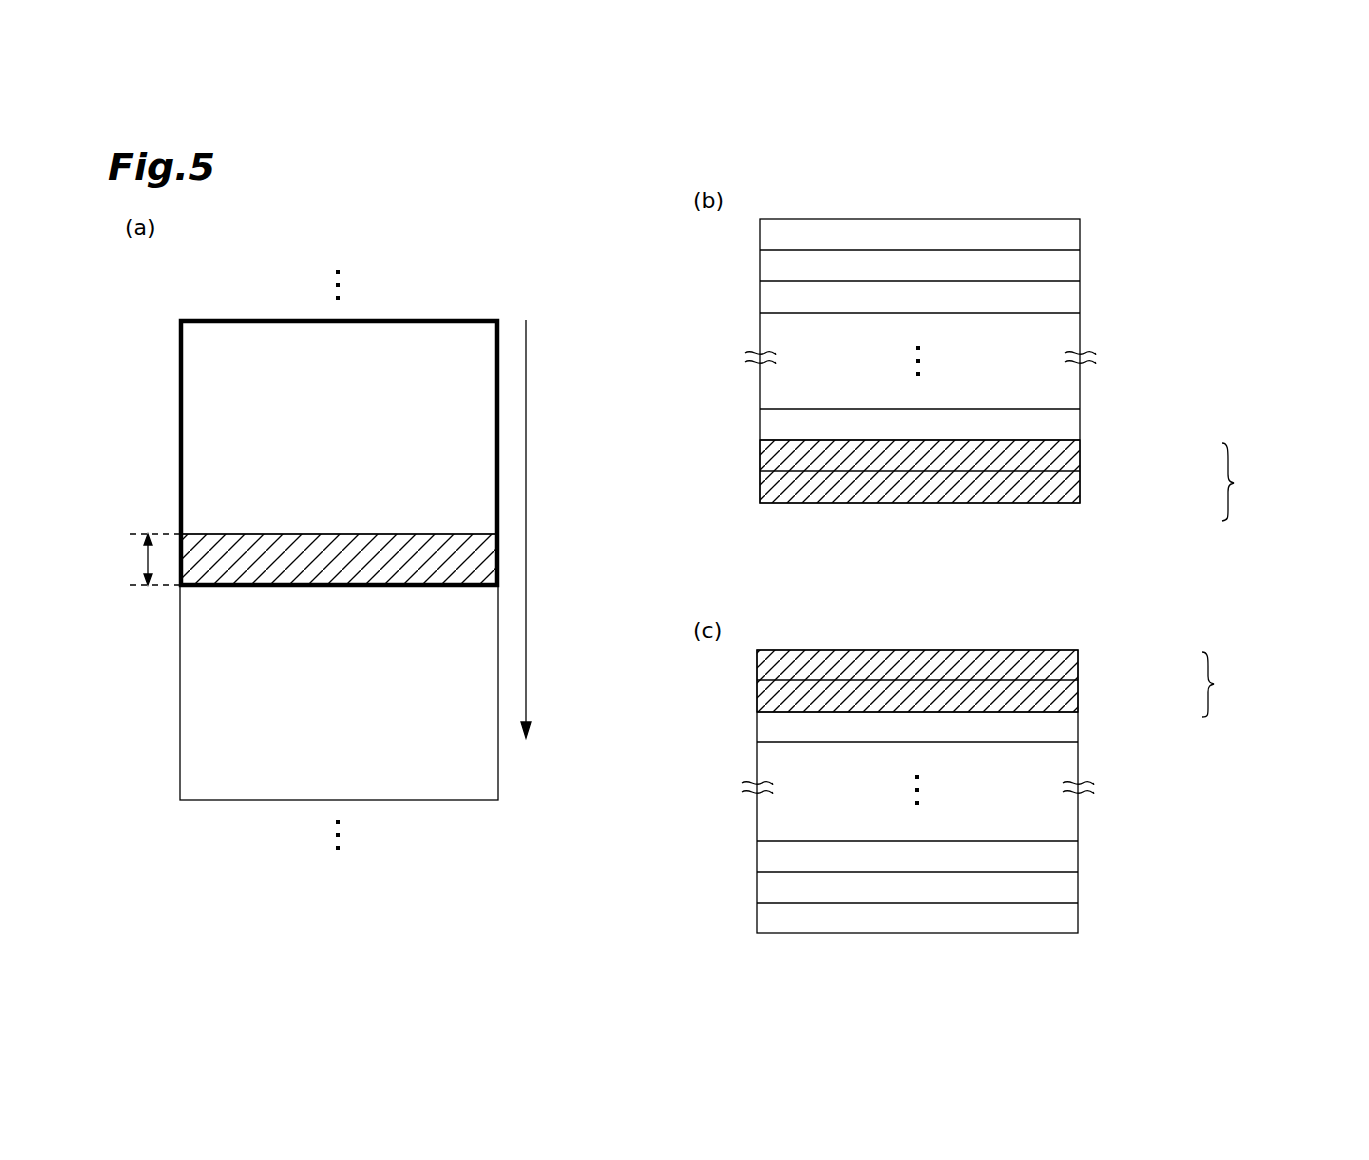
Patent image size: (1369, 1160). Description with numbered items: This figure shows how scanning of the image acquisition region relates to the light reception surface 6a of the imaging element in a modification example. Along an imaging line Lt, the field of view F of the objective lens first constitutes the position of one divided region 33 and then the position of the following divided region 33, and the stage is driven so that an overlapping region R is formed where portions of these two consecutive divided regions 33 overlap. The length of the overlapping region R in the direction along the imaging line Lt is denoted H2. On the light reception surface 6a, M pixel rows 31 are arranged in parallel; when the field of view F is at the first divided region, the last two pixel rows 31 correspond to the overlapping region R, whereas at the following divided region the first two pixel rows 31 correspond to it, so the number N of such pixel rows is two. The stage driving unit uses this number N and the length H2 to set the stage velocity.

The imaging line Lt is at (452, 230).
The field of view of the objective lens F is at (180, 380).
The divided region 33 is at (461, 441).
The overlapping region R is at (465, 541).
The length of the overlapping region H2 is at (143, 559).
The light reception surface 6a is at (1086, 203).
The pixel row 31 is at (1072, 238).